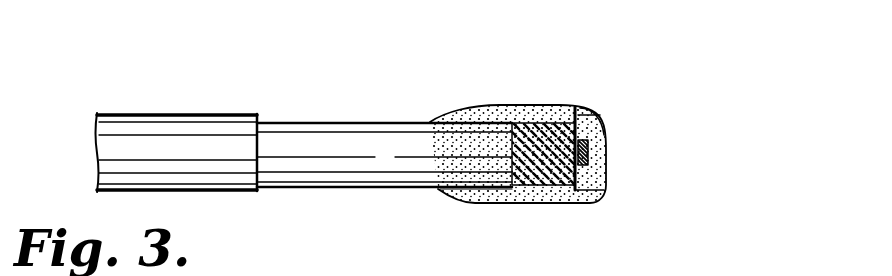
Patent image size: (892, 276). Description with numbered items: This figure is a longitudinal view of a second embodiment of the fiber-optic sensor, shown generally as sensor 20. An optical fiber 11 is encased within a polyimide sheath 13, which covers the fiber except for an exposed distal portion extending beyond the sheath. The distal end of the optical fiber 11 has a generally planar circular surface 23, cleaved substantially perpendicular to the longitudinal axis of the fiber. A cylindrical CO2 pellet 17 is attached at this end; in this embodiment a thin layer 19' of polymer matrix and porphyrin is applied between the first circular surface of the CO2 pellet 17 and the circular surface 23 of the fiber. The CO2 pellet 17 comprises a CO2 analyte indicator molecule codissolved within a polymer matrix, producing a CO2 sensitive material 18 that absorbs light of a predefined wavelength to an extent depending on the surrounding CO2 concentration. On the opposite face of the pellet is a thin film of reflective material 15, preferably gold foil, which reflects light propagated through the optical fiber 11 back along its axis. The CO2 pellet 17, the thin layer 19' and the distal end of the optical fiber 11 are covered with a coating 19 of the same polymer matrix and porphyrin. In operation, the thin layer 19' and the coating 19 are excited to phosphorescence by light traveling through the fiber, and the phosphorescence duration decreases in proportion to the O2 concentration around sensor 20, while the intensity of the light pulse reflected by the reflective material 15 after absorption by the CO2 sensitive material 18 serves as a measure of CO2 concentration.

The optical fiber 11 is at (360, 187).
The polyimide sheath 13 is at (158, 113).
The reflective material 15 is at (588, 160).
The CO2 pellet 17 is at (590, 132).
The CO2 sensitive material 18 is at (582, 195).
The coating 19 is at (549, 168).
The thin layer 19' is at (507, 218).
The sensor 20 is at (668, 87).
The circular surface 23 is at (598, 128).